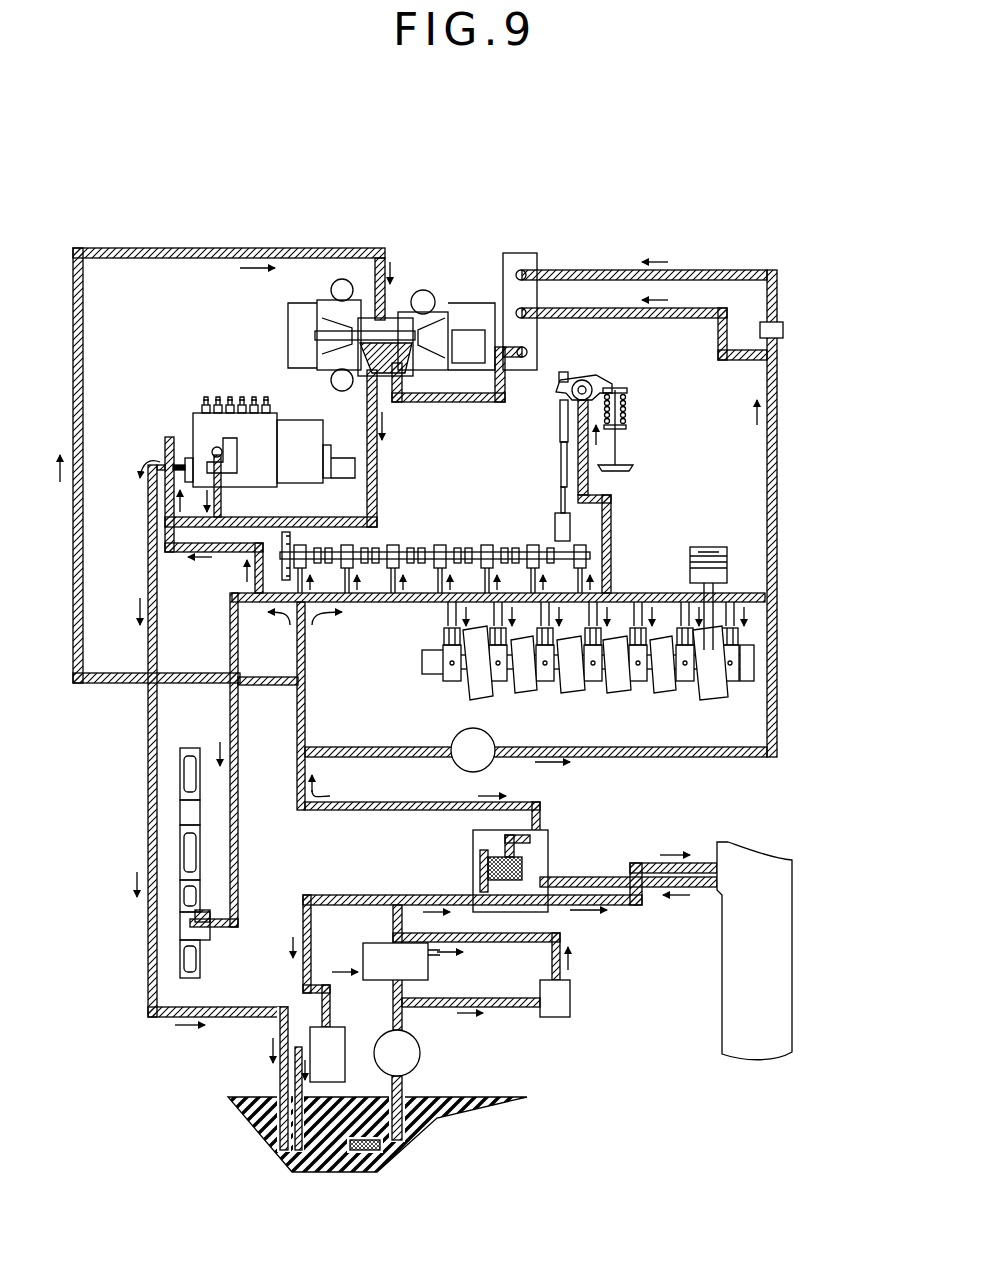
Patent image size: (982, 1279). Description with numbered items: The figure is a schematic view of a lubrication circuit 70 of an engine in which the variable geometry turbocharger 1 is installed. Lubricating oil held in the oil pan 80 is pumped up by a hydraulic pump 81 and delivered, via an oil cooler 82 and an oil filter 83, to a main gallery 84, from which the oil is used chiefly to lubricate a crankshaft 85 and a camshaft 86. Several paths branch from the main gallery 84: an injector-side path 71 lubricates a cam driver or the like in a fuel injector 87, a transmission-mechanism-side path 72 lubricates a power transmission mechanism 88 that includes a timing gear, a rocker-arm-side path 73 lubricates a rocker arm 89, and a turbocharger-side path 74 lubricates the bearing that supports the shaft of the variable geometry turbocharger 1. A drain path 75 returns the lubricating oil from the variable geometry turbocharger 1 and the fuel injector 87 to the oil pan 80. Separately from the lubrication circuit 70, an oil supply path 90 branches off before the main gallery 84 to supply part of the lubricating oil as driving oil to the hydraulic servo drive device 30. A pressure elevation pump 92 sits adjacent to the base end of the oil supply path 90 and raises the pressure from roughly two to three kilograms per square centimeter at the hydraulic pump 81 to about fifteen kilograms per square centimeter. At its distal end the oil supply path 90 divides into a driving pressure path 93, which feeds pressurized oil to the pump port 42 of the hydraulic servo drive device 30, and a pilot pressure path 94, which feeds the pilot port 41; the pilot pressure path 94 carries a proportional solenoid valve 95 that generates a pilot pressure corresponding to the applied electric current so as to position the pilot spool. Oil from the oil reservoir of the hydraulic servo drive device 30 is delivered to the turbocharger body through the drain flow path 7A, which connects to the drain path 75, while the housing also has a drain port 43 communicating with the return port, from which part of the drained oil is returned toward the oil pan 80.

The lubrication circuit 70 is at (441, 224).
The variable geometry turbocharger 1 is at (455, 259).
The hydraulic servo drive device 30 is at (517, 253).
The pilot port 41 is at (524, 274).
The pump port 42 is at (525, 318).
The drain port 43 is at (521, 358).
The drain flow path 7A is at (428, 403).
The pilot pressure path 94 is at (779, 291).
The proportional solenoid valve 95 is at (784, 330).
The driving pressure path 93 is at (740, 362).
The rocker arm 89 is at (603, 383).
The rocker-arm-side path 73 is at (612, 508).
The camshaft 86 is at (430, 546).
The fuel injector 87 is at (237, 415).
The turbocharger-side path 74 is at (83, 380).
The injector-side path 71 is at (233, 551).
The main gallery 84 is at (396, 603).
The crankshaft 85 is at (742, 680).
The pressure elevation pump 92 is at (493, 736).
The oil supply path 90 is at (640, 760).
The drain path 75 is at (148, 795).
The transmission-mechanism-side path 72 is at (240, 850).
The power transmission mechanism 88 is at (216, 938).
The oil cooler 82 is at (430, 971).
The oil filter 83 is at (720, 983).
The hydraulic pump 81 is at (421, 1051).
The oil pan 80 is at (410, 1150).